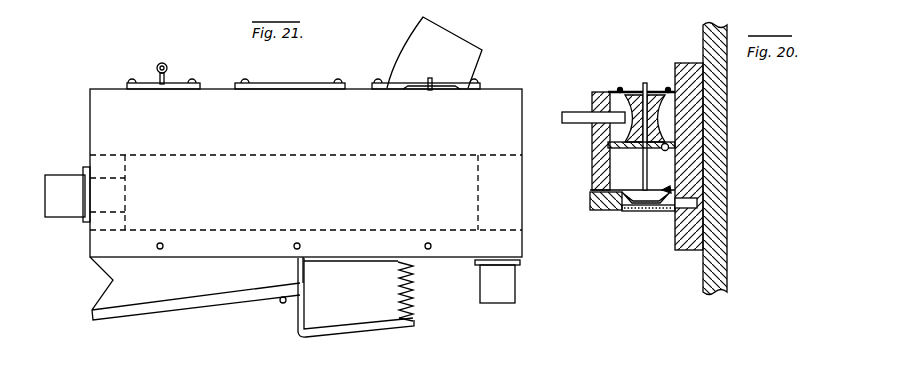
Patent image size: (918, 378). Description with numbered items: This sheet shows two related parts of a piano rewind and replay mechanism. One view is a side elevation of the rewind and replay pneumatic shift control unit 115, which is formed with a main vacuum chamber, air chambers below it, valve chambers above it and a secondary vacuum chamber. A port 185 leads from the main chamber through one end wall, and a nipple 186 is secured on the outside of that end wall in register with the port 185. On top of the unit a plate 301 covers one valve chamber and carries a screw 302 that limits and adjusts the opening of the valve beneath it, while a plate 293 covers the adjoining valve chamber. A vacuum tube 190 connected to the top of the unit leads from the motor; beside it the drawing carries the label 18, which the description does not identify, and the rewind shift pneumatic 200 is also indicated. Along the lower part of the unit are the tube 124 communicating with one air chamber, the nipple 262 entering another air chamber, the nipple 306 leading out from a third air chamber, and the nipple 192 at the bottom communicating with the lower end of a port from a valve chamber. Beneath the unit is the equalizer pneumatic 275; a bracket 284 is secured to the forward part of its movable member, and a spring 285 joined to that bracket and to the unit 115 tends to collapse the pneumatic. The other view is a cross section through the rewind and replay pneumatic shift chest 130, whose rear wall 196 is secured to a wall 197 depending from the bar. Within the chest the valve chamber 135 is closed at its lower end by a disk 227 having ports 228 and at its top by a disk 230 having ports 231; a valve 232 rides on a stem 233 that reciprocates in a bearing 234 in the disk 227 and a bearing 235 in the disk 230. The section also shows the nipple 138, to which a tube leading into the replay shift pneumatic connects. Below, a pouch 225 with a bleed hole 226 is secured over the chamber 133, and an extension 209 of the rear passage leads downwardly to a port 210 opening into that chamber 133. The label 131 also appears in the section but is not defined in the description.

In FIG. 21, the rewind and replay pneumatic shift control unit 115 is at (306, 173).
In FIG. 21, the port 185 is at (117, 198).
In FIG. 21, the nipple 186 is at (67, 194).
In FIG. 21, the screw 302 is at (156, 66).
In FIG. 21, the plate 301 is at (187, 84).
In FIG. 21, the plate 293 is at (293, 85).
In FIG. 21, the vacuum tube 190 is at (427, 53).
In FIG. 21, the panel 18 is at (396, 9).
In FIG. 21, the rewind shift pneumatic 200 is at (445, 3).
In FIG. 21, the nipple 262 is at (156, 246).
In FIG. 21, the tube 124 is at (293, 246).
In FIG. 21, the nipple 306 is at (424, 246).
In FIG. 21, the equalizer pneumatic 275 is at (115, 280).
In FIG. 21, the bracket 284 is at (365, 327).
In FIG. 21, the spring 285 is at (398, 277).
In FIG. 21, the nipple 192 is at (515, 295).
In FIG. 20, the wall 197 is at (717, 218).
In FIG. 20, the rear wall 196 is at (697, 240).
In FIG. 20, the rewind and replay pneumatic shift chest 130 is at (584, 141).
In FIG. 20, the stem 233 is at (594, 192).
In FIG. 20, the valve 232 is at (650, 118).
In FIG. 20, the nipple 138 is at (565, 113).
In FIG. 20, the valve chamber 135 is at (592, 131).
In FIG. 20, the disk 230 is at (619, 89).
In FIG. 20, the ports 231 is at (652, 92).
In FIG. 20, the bearing 235 is at (650, 84).
In FIG. 20, the ports 228 is at (658, 136).
In FIG. 20, the plate 131 is at (640, 148).
In FIG. 20, the disk 227 is at (668, 147).
In FIG. 20, the bearing 234 is at (625, 179).
In FIG. 20, the pouch 225 is at (648, 208).
In FIG. 20, the port 210 is at (672, 212).
In FIG. 20, the bleed hole 226 is at (673, 188).
In FIG. 20, the extension 209 is at (690, 200).
In FIG. 20, the chamber 133 is at (628, 208).